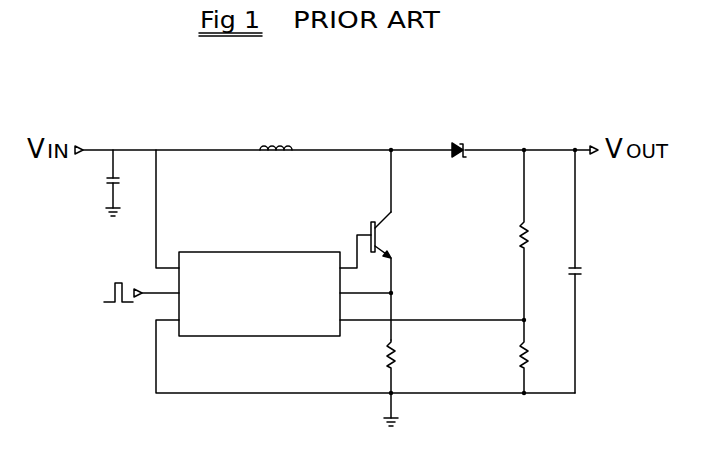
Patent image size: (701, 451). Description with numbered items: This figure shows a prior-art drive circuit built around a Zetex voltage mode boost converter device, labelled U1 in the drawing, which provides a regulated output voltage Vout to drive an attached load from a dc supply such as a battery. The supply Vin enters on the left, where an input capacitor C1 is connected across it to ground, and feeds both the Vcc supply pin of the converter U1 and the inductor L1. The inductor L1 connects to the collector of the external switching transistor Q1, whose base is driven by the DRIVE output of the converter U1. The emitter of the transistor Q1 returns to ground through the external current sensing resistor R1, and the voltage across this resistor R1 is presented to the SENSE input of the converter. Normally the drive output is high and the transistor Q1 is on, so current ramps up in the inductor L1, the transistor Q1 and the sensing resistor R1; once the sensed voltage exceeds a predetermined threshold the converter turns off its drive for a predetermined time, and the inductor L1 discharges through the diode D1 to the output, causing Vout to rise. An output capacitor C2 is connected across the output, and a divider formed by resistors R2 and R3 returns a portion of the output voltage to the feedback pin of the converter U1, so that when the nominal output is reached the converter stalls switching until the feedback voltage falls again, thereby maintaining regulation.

The capacitor C1 is at (127, 183).
The inductor L1 is at (276, 130).
The diode D1 is at (457, 151).
The external switching transistor Q1 is at (420, 245).
The gate U1 is at (314, 294).
The external current sensing resistor R1 is at (407, 383).
The resistor R2 is at (542, 235).
The resistor R3 is at (540, 356).
The capacitor C2 is at (590, 271).